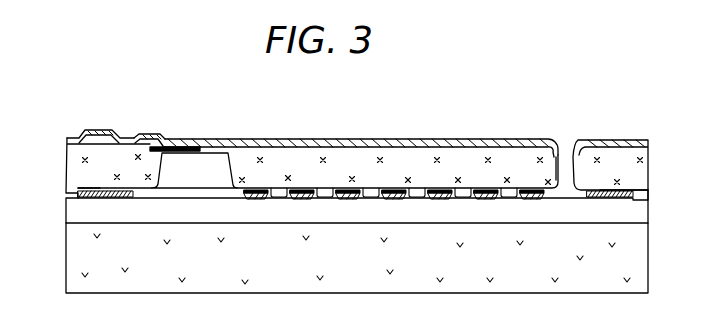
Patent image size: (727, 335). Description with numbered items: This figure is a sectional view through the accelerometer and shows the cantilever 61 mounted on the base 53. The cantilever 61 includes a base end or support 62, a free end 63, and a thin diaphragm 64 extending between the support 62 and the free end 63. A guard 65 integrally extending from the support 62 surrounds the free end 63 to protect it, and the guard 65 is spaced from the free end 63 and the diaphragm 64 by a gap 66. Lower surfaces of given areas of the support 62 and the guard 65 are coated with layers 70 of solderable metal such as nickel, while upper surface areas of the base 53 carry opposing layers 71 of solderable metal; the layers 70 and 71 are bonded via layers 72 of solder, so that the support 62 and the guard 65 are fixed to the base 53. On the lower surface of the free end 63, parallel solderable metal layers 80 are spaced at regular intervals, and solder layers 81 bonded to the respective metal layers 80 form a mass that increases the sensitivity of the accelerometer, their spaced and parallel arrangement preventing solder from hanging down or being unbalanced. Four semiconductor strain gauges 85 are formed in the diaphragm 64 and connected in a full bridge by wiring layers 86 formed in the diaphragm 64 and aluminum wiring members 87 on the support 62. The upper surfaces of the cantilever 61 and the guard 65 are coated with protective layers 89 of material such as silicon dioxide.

The base 53 is at (633, 264).
The cantilever 61 is at (373, 143).
The support 62 is at (72, 155).
The free end 63 is at (467, 163).
The diaphragm 64 is at (219, 149).
The guard 65 is at (622, 158).
The gap 66 is at (566, 167).
The solderable layers 70 is at (75, 189).
The solderable metal layers 71 is at (92, 199).
The solder layers 72 is at (68, 188).
The solderable metal layers 80 is at (263, 192).
The solder layers 81 is at (253, 190).
The semiconductor strain gauges 85 is at (196, 140).
The wiring layers 86 is at (175, 147).
The wiring members 87 is at (129, 137).
The protective layers 89 is at (345, 143).